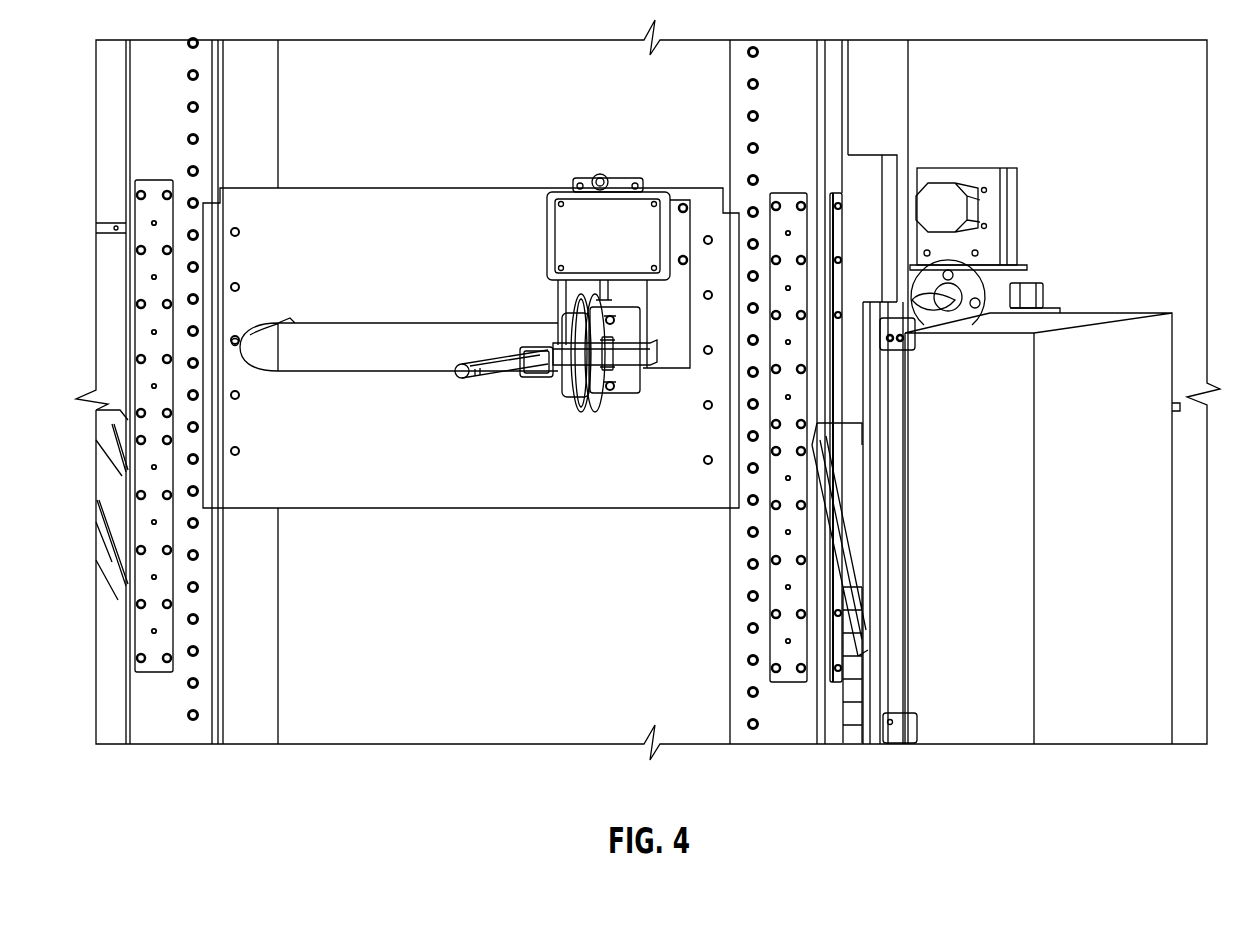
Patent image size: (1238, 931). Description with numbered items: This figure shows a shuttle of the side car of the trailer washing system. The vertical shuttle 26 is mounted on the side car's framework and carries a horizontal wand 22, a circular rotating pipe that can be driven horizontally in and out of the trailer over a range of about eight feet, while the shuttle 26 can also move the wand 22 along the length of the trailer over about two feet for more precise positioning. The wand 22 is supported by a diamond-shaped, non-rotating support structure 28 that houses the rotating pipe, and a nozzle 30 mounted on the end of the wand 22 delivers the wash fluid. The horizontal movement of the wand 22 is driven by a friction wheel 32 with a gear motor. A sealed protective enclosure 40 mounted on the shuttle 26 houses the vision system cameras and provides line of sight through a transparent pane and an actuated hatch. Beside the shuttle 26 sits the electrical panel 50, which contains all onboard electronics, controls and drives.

The wand 22 is at (521, 372).
The vertical shuttle 26 is at (292, 450).
The support structure 28 is at (628, 322).
The nozzle 30 is at (459, 380).
The friction wheel 32 is at (600, 405).
The protective enclosure 40 is at (563, 210).
The electrical panel 50 is at (1008, 523).